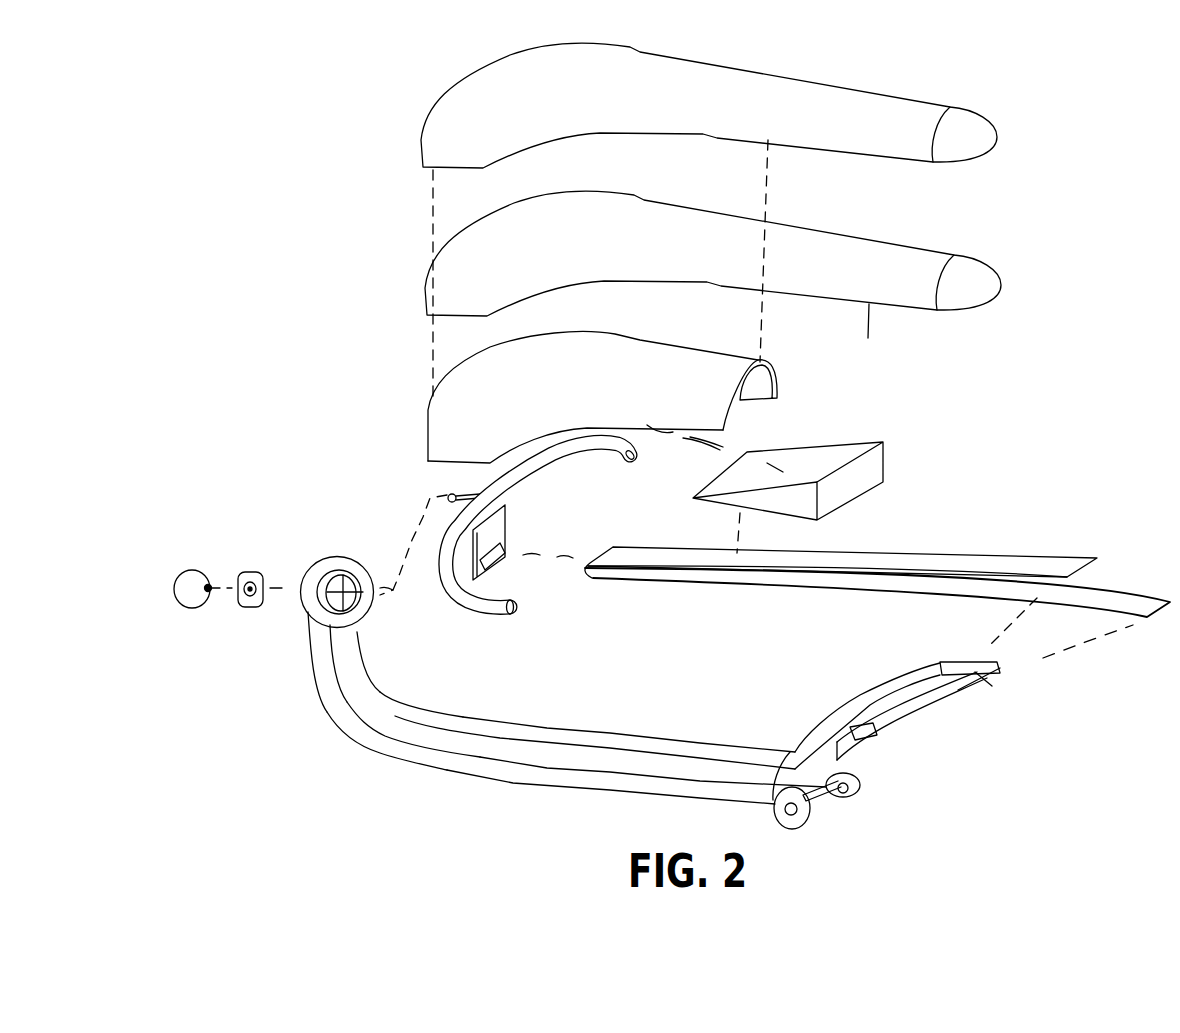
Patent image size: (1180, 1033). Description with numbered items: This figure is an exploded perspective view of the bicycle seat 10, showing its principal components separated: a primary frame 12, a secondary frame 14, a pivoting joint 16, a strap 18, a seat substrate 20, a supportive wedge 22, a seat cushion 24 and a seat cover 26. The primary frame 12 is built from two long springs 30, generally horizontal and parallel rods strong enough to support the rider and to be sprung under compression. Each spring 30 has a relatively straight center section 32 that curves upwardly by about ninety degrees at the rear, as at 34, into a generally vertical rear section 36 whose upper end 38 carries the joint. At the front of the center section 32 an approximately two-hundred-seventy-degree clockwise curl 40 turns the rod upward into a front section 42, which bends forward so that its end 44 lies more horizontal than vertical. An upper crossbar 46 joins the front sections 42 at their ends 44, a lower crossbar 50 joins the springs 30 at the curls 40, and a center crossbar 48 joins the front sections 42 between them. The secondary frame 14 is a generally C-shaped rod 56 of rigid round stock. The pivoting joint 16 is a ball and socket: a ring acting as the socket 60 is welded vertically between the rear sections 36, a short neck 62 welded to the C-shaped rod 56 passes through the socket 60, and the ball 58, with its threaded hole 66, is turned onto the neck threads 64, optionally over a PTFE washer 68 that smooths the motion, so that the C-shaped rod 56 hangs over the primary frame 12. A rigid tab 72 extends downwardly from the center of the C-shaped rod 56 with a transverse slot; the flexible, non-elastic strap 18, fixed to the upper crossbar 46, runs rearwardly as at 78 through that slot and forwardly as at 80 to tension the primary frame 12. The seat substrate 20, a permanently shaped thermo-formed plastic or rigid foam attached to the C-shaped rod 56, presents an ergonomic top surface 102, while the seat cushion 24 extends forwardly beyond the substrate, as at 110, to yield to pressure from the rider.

The bicycle seat 10 is at (303, 110).
The primary frame 12 is at (545, 724).
The secondary frame 14 is at (468, 561).
The pivoting joint 16 is at (282, 551).
The strap 18 is at (877, 563).
The seat substrate 20 is at (784, 373).
The supportive wedge 22 is at (892, 457).
The seat cushion 24 is at (913, 313).
The seat cover 26 is at (930, 100).
The spring 30 is at (582, 727).
The center section 32 is at (652, 737).
The upward curve 34 is at (395, 692).
The rear section 36 is at (373, 645).
The upper end of rear section 38 is at (303, 615).
The curl 40 is at (862, 792).
The front section 42 is at (860, 697).
The end of front section 44 is at (937, 665).
The upper crossbar 46 is at (978, 675).
The center crossbar 48 is at (875, 738).
The lower crossbar 50 is at (830, 800).
The C-shaped rod 56 is at (543, 468).
The ball 58 is at (197, 586).
The socket 60 is at (320, 577).
The neck 62 is at (460, 512).
The neck threads 64 is at (455, 494).
The threaded hole 66 is at (210, 600).
The washer 68 is at (252, 567).
The rigid tab 72 is at (512, 522).
The rearward strap portion 78 is at (897, 552).
The forward strap portion 80 is at (812, 593).
The top surface 102 is at (648, 337).
The forward cushion extension 110 is at (880, 335).